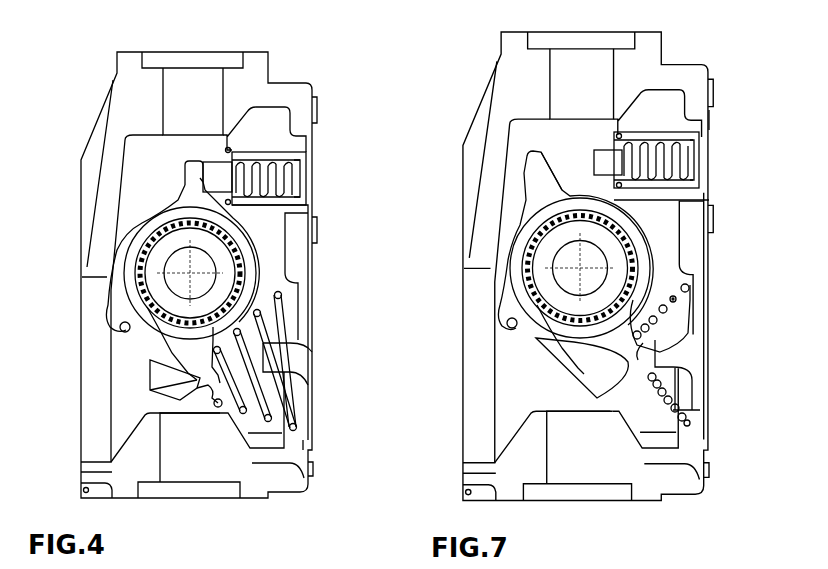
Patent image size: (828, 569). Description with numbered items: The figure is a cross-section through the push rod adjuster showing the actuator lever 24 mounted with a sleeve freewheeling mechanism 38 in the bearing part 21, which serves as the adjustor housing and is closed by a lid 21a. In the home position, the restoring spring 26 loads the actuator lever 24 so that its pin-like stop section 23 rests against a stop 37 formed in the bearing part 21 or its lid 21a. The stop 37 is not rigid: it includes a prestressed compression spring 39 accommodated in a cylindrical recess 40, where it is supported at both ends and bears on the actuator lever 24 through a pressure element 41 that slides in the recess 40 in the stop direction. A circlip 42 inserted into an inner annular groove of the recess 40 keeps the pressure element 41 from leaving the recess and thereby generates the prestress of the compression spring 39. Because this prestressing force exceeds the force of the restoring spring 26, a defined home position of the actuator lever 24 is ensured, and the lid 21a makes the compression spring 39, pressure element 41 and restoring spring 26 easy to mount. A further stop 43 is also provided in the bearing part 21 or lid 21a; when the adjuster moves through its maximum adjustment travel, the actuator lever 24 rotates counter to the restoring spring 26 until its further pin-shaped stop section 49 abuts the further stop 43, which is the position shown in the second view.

In FIG. 4, the bearing part 21 is at (133, 82).
In FIG. 7, the bearing part 21 is at (660, 53).
In FIG. 4, the lid 21a is at (303, 445).
In FIG. 7, the lid 21a is at (701, 124).
In FIG. 4, the pin-like stop section 23 is at (185, 173).
In FIG. 7, the pin-like stop section 23 is at (534, 172).
In FIG. 4, the actuator lever 24 is at (135, 283).
In FIG. 4, the restoring spring 26 is at (283, 308).
In FIG. 7, the restoring spring 26 is at (688, 426).
In FIG. 4, the stop 37 is at (200, 178).
In FIG. 7, the stop 37 is at (580, 166).
In FIG. 4, the sleeve freewheeling mechanism 38 is at (157, 313).
In FIG. 7, the sleeve freewheeling mechanism 38 is at (533, 265).
In FIG. 4, the compression spring 39 is at (294, 175).
In FIG. 4, the recess 40 is at (294, 150).
In FIG. 4, the pressure element 41 is at (218, 170).
In FIG. 4, the circlip 42 is at (228, 147).
In FIG. 4, the further stop 43 is at (275, 348).
In FIG. 7, the further stop 43 is at (669, 347).
In FIG. 4, the further pin-shaped stop section 49 is at (197, 380).
In FIG. 7, the further pin-shaped stop section 49 is at (660, 330).